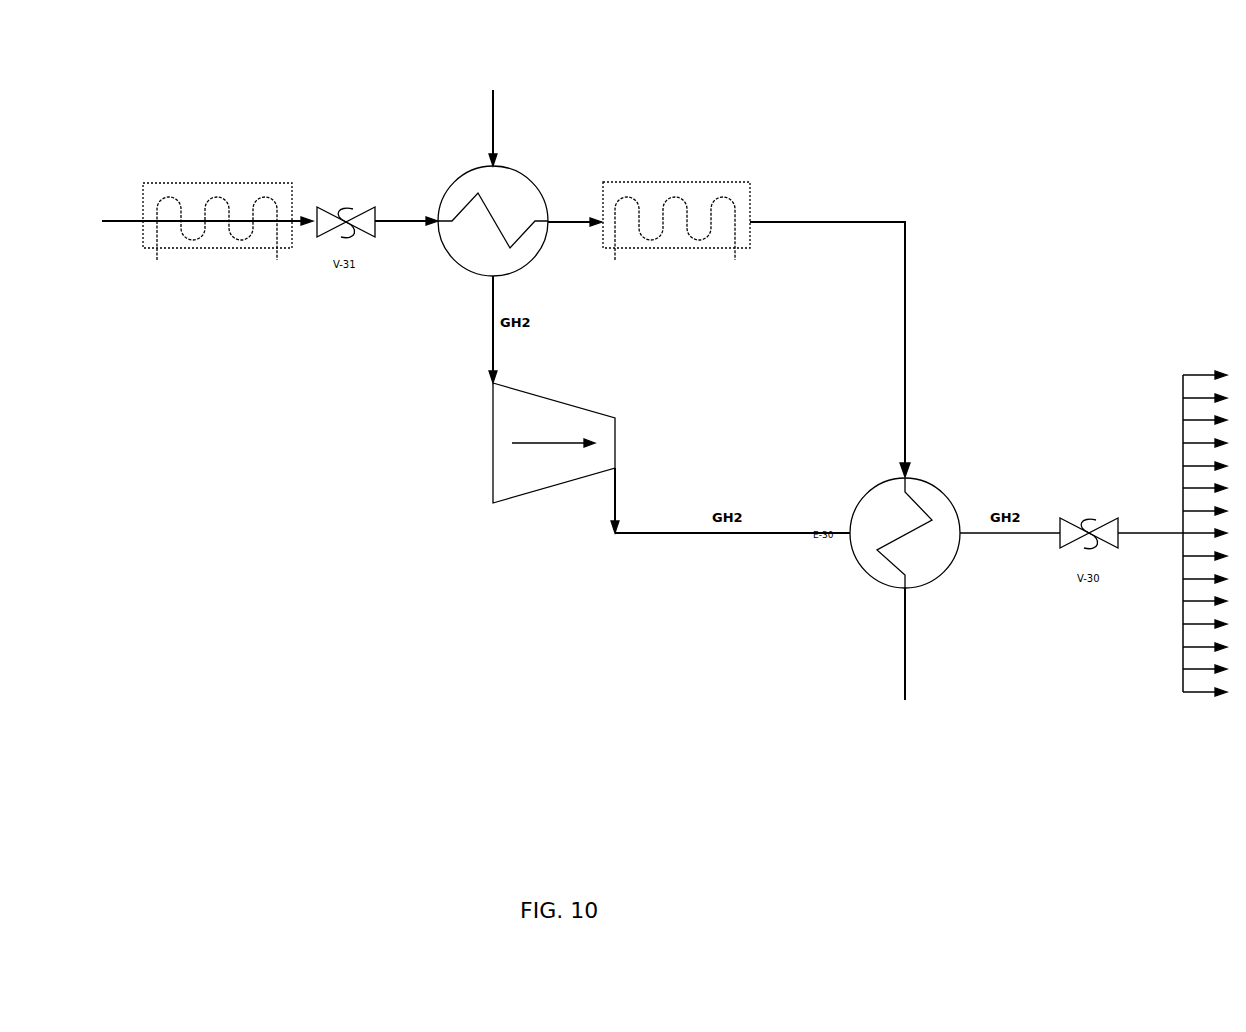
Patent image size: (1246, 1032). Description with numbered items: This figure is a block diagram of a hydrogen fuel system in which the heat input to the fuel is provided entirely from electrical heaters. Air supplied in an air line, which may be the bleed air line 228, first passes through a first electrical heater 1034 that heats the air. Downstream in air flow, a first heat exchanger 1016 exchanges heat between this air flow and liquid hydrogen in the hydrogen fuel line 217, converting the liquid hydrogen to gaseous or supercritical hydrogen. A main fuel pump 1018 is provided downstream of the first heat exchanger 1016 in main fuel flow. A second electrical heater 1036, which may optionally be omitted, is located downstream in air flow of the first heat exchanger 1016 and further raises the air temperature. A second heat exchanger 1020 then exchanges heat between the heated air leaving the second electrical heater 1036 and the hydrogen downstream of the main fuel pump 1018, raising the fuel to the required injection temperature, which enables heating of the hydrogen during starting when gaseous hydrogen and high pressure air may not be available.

The bleed air line 228 is at (123, 220).
The first electrical heater 1034 is at (212, 175).
The hydrogen fuel line 217 is at (488, 127).
The first heat exchanger 1016 is at (452, 247).
The second electrical heater 1036 is at (678, 175).
The main fuel pump 1018 is at (493, 470).
The second heat exchanger 1020 is at (943, 488).